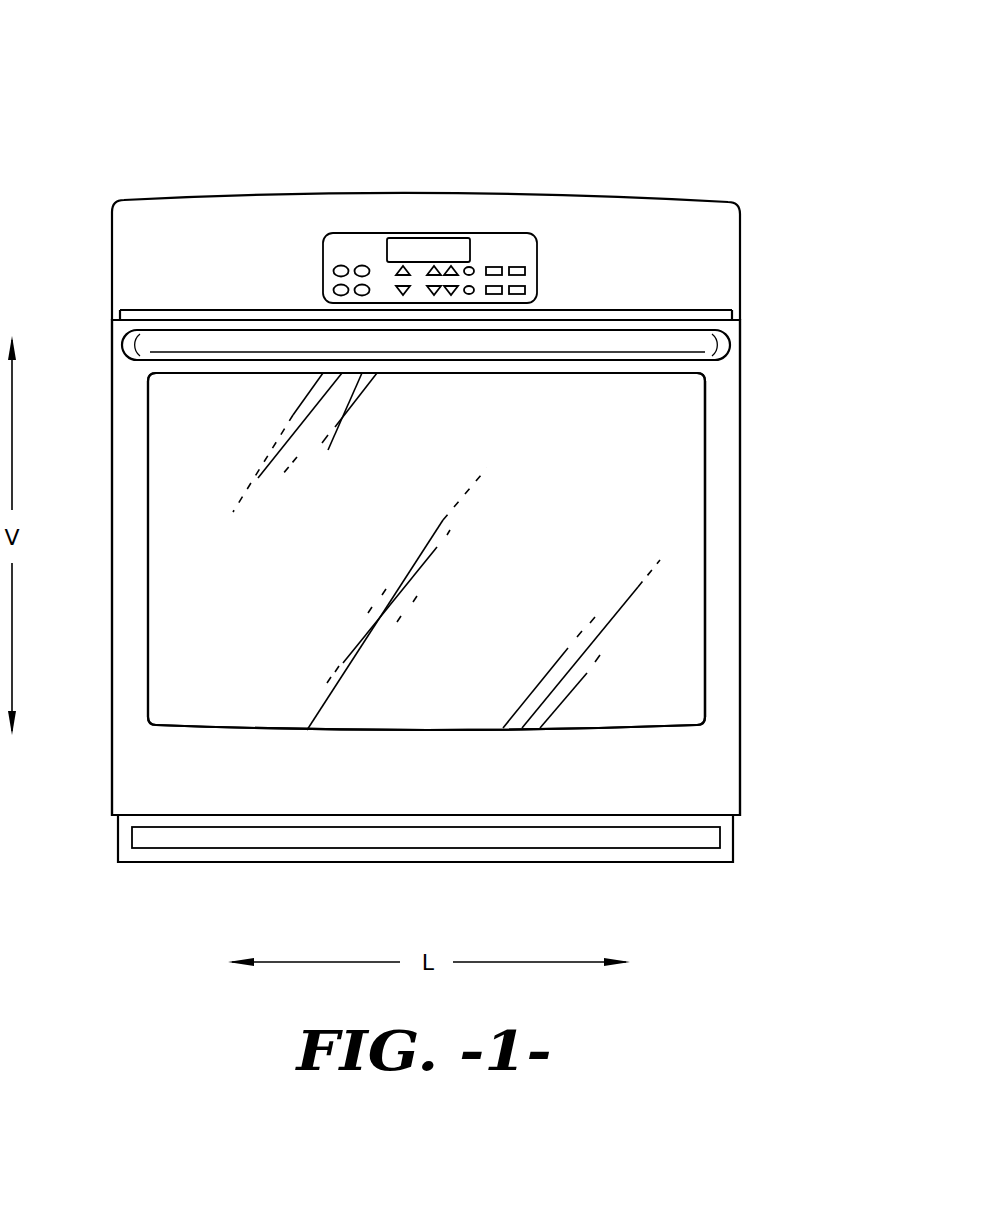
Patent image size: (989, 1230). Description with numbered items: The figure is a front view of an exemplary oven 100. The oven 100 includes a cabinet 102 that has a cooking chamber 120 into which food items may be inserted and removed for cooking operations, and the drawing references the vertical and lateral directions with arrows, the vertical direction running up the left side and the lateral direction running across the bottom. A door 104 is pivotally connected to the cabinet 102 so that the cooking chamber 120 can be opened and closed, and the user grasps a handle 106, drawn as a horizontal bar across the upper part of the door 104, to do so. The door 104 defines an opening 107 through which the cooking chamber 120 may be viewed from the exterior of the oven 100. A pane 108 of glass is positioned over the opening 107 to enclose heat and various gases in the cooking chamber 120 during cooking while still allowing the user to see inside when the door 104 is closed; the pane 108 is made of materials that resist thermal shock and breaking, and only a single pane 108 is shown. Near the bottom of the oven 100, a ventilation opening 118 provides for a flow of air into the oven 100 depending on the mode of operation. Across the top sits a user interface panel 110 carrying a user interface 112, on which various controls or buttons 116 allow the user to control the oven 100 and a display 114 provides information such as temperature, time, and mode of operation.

The oven 100 is at (450, 457).
The cabinet 102 is at (733, 838).
The door 104 is at (718, 460).
The handle 106 is at (705, 347).
The opening 107 is at (710, 646).
The pane 108 is at (657, 532).
The user interface panel 110 is at (662, 228).
The user interface 112 is at (419, 210).
The display 114 is at (427, 250).
The buttons 116 is at (338, 268).
The ventilation opening 118 is at (675, 838).
The cooking chamber 120 is at (178, 528).